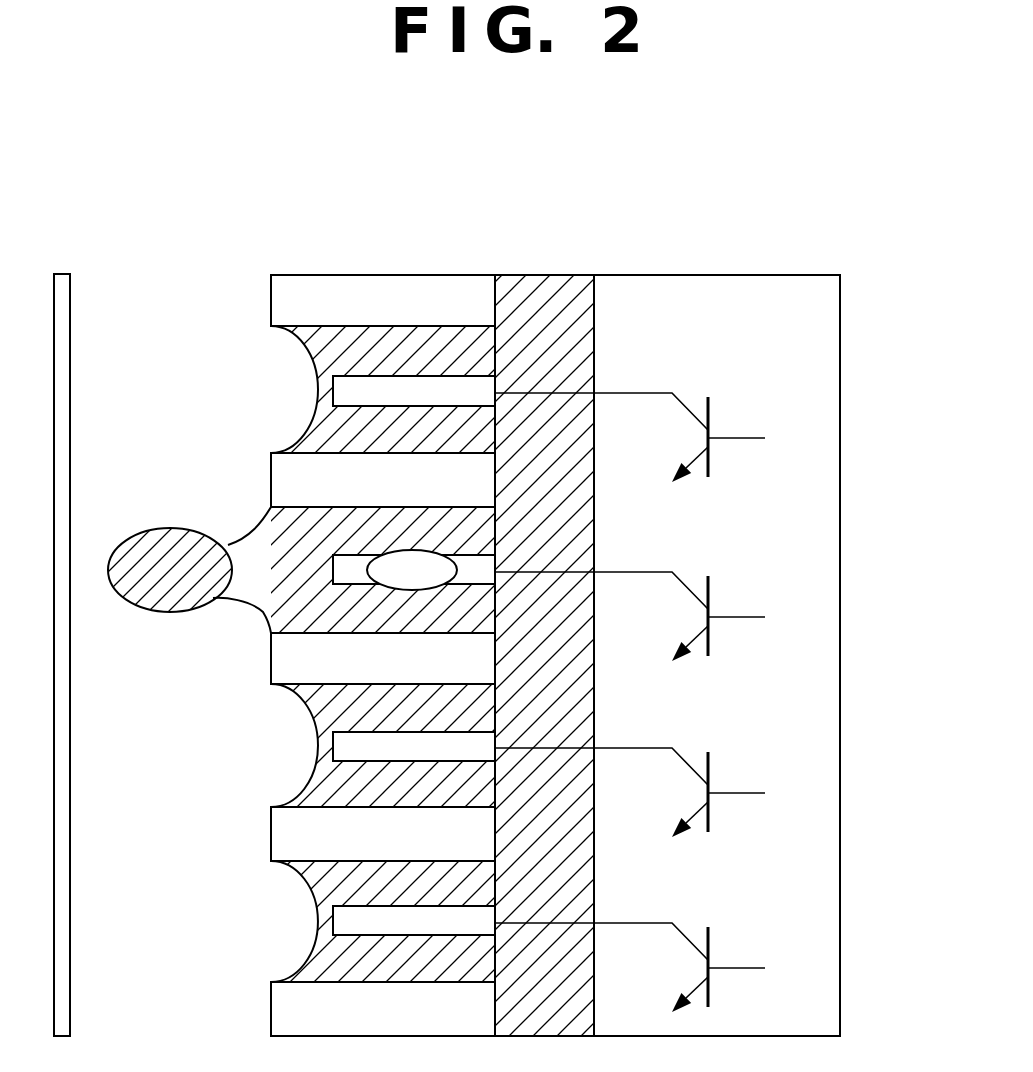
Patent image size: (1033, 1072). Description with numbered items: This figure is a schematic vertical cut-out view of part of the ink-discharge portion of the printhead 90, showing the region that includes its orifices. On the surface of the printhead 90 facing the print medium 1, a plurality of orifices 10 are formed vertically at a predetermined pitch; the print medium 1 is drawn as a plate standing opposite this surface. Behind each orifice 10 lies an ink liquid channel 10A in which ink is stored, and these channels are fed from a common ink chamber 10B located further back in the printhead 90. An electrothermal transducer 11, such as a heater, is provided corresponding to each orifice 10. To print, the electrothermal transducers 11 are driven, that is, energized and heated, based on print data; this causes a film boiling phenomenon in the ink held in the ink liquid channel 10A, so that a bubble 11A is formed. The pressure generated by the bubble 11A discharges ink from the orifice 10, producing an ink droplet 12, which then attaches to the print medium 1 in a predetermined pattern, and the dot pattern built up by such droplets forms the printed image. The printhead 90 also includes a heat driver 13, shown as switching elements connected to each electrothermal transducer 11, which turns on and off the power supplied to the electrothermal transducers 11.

The print medium 1 is at (62, 274).
The orifice 10 is at (427, 618).
The ink liquid channel 10A is at (415, 345).
The common ink chamber 10B is at (560, 282).
The electrothermal transducer 11 is at (337, 925).
The bubble 11A is at (390, 582).
The ink droplet 12 is at (169, 528).
The heat driver 13 is at (711, 937).
The printhead 90 is at (560, 618).